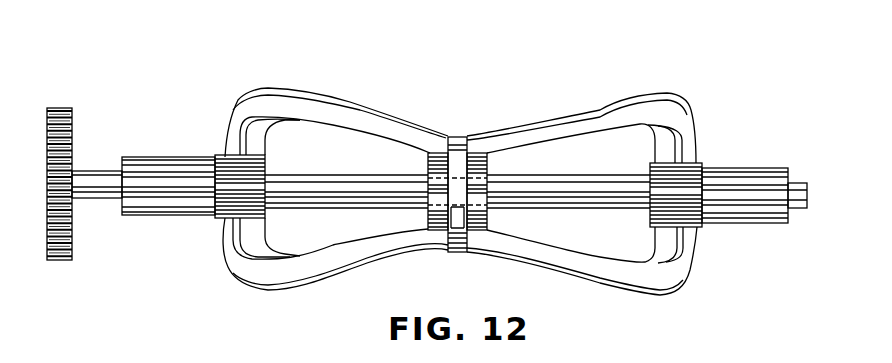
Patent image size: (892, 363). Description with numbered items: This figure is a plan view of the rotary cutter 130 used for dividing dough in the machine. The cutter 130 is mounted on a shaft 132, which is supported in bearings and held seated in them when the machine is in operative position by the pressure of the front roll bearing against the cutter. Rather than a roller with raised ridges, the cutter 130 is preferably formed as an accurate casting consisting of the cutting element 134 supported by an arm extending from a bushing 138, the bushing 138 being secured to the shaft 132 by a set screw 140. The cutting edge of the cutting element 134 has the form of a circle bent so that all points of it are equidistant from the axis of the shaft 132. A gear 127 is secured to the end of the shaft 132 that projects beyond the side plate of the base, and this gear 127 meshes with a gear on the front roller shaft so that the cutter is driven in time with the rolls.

The gear 127 is at (62, 115).
The rotary cutter 130 is at (329, 100).
The shaft 132 is at (99, 171).
The cutting element 134 is at (488, 128).
The bushing 138 is at (442, 151).
The set screw 140 is at (473, 257).